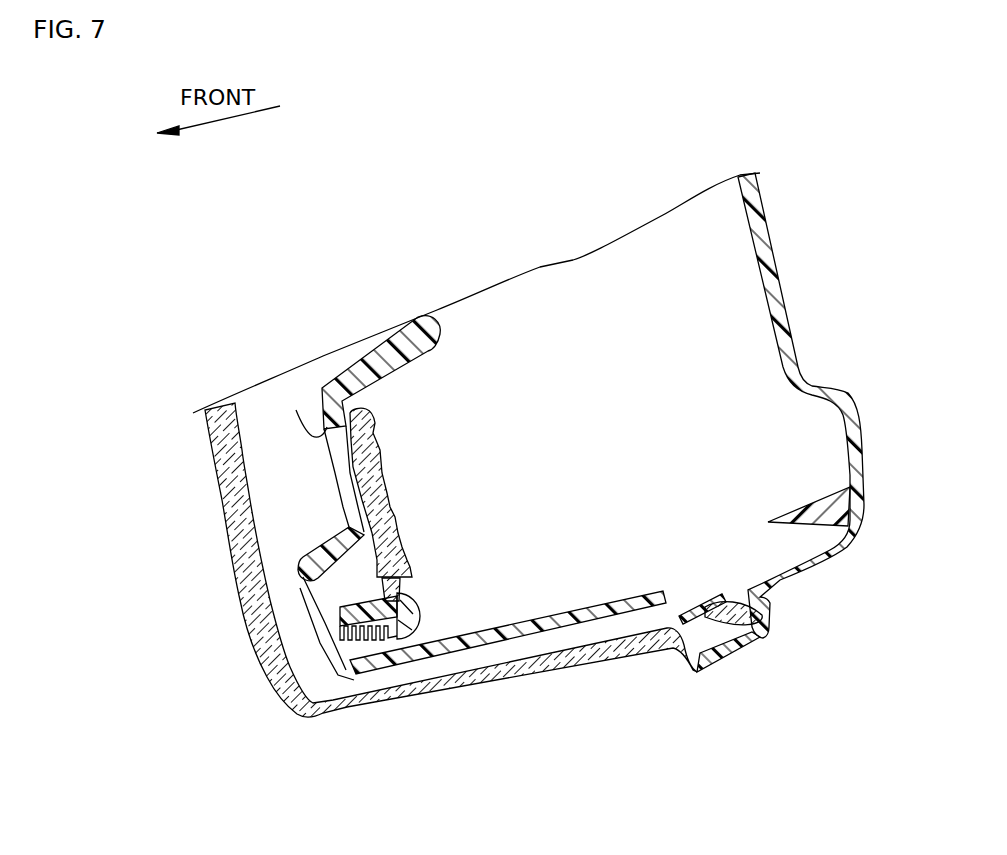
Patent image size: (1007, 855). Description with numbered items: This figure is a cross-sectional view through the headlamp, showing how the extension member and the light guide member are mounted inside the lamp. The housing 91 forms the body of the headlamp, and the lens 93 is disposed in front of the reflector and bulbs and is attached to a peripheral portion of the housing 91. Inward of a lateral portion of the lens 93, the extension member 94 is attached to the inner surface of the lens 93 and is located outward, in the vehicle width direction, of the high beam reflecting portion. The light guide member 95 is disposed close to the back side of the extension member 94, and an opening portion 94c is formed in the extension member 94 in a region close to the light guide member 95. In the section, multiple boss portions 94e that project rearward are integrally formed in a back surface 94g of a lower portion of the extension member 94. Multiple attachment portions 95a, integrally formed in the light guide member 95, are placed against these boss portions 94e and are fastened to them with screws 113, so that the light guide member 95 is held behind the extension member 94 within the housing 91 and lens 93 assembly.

The housing 91 is at (779, 282).
The lens 93 is at (252, 665).
The extension member 94 is at (357, 358).
The opening portion 94c is at (297, 412).
The boss portion 94e is at (380, 645).
The back surface 94g is at (305, 558).
The light guide member 95 is at (382, 439).
The attachment portion 95a is at (397, 648).
The screw 113 is at (420, 618).